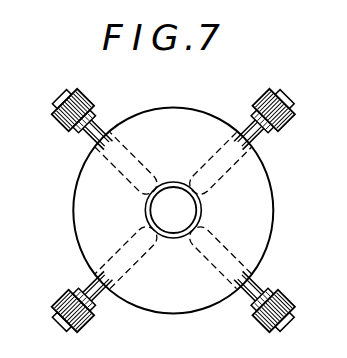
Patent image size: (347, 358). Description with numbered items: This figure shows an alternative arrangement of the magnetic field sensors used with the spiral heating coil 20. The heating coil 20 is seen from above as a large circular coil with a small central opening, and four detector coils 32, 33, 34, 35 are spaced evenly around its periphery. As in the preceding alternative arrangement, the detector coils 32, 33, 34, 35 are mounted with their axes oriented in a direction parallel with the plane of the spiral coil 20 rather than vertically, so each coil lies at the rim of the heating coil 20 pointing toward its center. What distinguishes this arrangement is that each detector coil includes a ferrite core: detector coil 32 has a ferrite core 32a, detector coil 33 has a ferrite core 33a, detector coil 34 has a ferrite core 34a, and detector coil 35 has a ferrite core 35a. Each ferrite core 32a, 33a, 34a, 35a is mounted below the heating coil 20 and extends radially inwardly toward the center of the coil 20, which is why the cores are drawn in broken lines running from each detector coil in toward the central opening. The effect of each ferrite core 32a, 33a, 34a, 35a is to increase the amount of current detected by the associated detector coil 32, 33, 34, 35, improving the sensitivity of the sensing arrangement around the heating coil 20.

The heating coil 20 is at (258, 205).
The detector coil 32 is at (86, 96).
The ferrite core 32a is at (133, 153).
The detector coil 33 is at (293, 305).
The ferrite core 33a is at (260, 285).
The detector coil 34 is at (283, 93).
The ferrite core 34a is at (263, 133).
The detector coil 35 is at (52, 310).
The ferrite core 35a is at (90, 285).